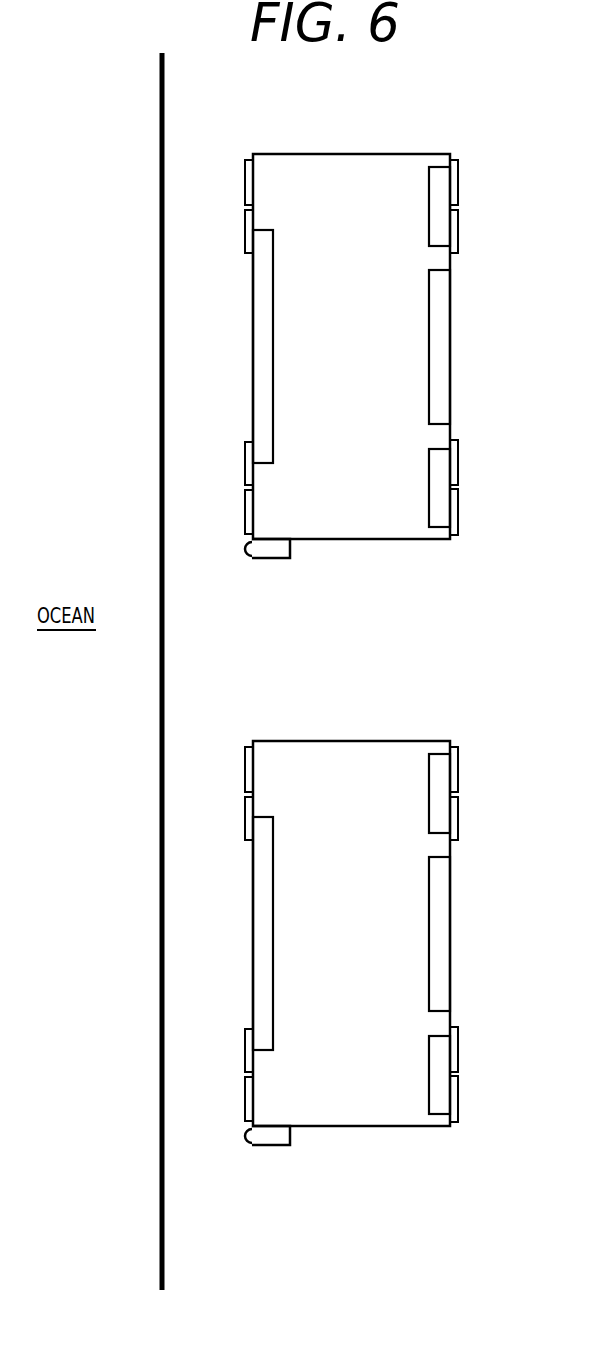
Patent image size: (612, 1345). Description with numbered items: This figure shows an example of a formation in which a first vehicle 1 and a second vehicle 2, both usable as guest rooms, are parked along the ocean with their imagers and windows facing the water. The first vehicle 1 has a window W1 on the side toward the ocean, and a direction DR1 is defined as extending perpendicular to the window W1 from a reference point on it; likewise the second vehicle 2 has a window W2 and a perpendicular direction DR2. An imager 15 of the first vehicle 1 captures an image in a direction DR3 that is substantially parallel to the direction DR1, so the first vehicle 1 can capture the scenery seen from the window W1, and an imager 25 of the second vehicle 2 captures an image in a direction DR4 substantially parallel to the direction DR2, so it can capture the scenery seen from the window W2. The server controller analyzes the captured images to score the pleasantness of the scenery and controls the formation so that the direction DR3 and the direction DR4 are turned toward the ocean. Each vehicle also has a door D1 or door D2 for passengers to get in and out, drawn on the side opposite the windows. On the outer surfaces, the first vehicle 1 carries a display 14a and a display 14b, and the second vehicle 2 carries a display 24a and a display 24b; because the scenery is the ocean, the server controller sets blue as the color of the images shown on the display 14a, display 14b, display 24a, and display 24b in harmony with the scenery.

The first vehicle 1 is at (352, 154).
The second vehicle 2 is at (351, 892).
The display 14a is at (438, 192).
The display 14b is at (438, 473).
The imager 15 is at (283, 551).
The display 24a is at (478, 793).
The display 24b is at (478, 1075).
The imager 25 is at (301, 1148).
The door D1 is at (438, 304).
The door D2 is at (474, 934).
The window W1 is at (263, 280).
The window W2 is at (228, 933).
The direction DR1 is at (115, 347).
The direction DR2 is at (183, 922).
The direction DR3 is at (112, 549).
The direction DR4 is at (177, 1123).